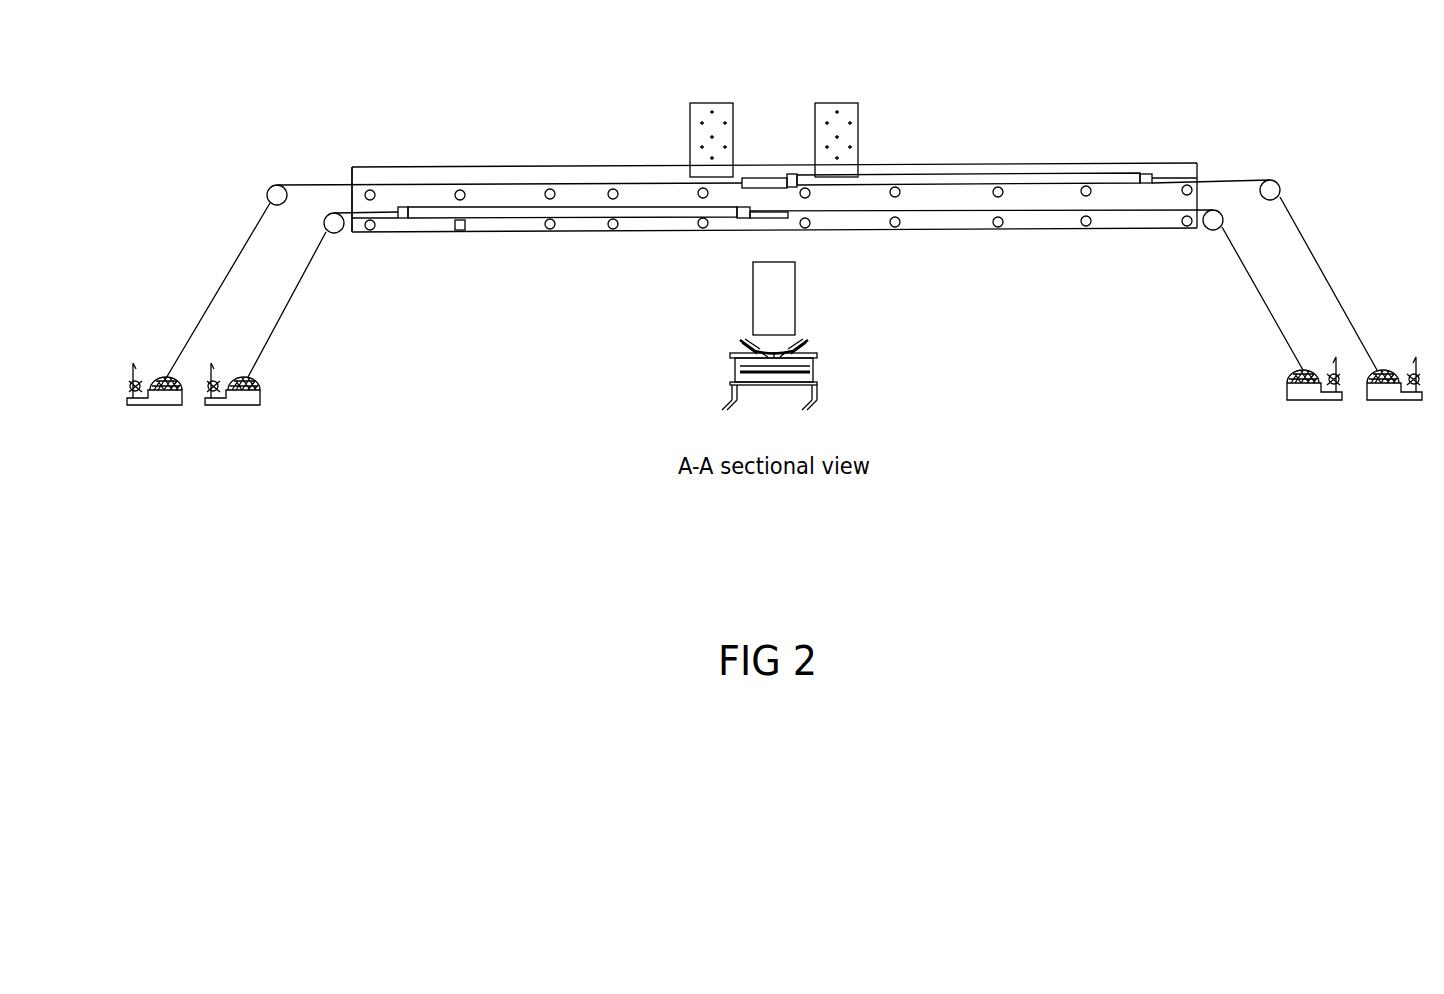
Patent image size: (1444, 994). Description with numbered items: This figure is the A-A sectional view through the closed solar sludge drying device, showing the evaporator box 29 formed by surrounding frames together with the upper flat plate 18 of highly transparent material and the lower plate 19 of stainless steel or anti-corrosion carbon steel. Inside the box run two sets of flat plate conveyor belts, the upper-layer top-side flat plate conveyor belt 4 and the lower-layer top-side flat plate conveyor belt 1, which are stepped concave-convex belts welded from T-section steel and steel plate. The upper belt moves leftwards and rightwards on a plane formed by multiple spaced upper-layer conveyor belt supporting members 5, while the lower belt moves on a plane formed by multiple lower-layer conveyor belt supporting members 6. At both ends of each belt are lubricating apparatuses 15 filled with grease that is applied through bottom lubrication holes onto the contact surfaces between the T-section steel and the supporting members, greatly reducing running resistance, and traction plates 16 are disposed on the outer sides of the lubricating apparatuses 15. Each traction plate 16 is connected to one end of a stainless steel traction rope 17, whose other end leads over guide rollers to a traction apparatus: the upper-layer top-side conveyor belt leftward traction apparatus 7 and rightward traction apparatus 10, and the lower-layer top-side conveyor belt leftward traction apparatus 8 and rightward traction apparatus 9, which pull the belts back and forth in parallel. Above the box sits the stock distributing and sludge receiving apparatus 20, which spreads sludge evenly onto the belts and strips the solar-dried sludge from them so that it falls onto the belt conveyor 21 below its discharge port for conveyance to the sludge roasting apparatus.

The lower-layer top-side flat plate conveyor belt 1 is at (602, 207).
The upper-layer top-side flat plate conveyor belt 4 is at (995, 180).
The upper-layer conveyor belt supporting member 5 is at (458, 193).
The lower-layer conveyor belt supporting member 6 is at (458, 228).
The upper-layer top-side conveyor belt leftward traction apparatus 7 is at (155, 377).
The lower-layer top-side conveyor belt leftward traction apparatus 8 is at (242, 377).
The lower-layer top-side conveyor belt rightward traction apparatus 9 is at (1310, 367).
The upper-layer top-side conveyor belt rightward traction apparatus 10 is at (1390, 367).
The lubricating apparatus 15 is at (402, 216).
The traction plate 16 is at (365, 218).
The traction rope 17 is at (283, 298).
The upper flat plate 18 is at (612, 168).
The lower plate 19 is at (858, 232).
The stock distributing and sludge receiving apparatus 20 is at (705, 158).
The belt conveyor 21 is at (808, 340).
The evaporator box 29 is at (350, 177).